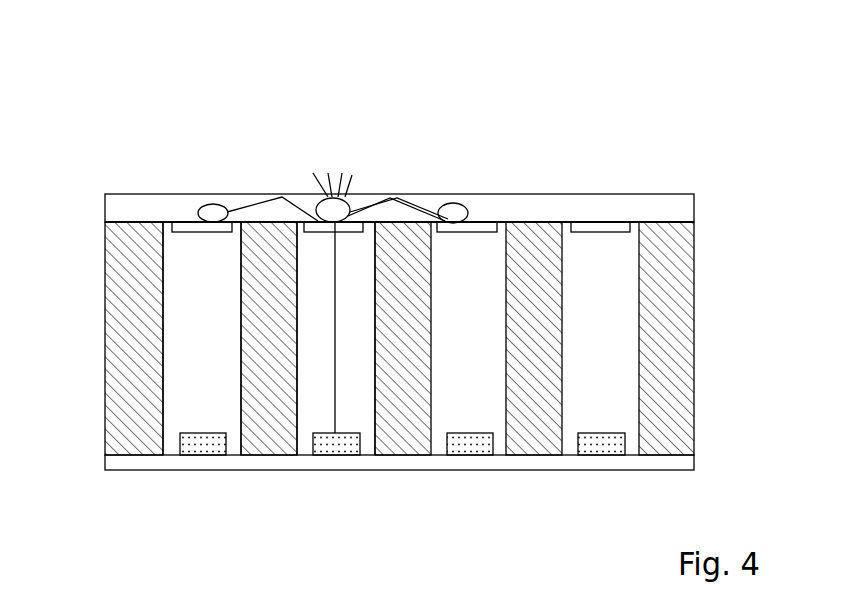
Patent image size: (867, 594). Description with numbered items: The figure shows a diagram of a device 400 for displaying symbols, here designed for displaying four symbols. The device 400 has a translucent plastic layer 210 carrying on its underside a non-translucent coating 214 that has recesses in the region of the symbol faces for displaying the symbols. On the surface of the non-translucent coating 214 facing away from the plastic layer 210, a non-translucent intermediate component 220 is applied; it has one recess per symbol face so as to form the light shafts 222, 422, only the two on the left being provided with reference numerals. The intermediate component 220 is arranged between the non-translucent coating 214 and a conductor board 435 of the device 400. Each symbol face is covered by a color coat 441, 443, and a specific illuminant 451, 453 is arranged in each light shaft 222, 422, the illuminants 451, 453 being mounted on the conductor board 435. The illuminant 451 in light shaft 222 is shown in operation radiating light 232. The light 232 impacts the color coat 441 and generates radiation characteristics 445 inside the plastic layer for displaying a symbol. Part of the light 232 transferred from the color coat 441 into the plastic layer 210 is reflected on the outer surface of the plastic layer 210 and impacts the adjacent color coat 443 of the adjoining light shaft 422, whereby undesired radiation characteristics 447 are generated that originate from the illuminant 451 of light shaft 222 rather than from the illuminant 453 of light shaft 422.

The device for displaying at least one symbol 400 is at (86, 164).
The translucent plastic layer 210 is at (534, 194).
The non-translucent coating 214 is at (566, 222).
The non-translucent intermediate component 220 is at (268, 422).
The light shaft 222 is at (318, 392).
The light 232 is at (336, 365).
The light shaft 422 is at (185, 402).
The conductor board 435 is at (473, 461).
The color coat 441 is at (310, 220).
The color coat 443 is at (178, 222).
The radiation characteristics 445 is at (352, 208).
The undesired radiation characteristics 447 is at (204, 210).
The illuminant 451 is at (335, 447).
The illuminant 453 is at (202, 445).